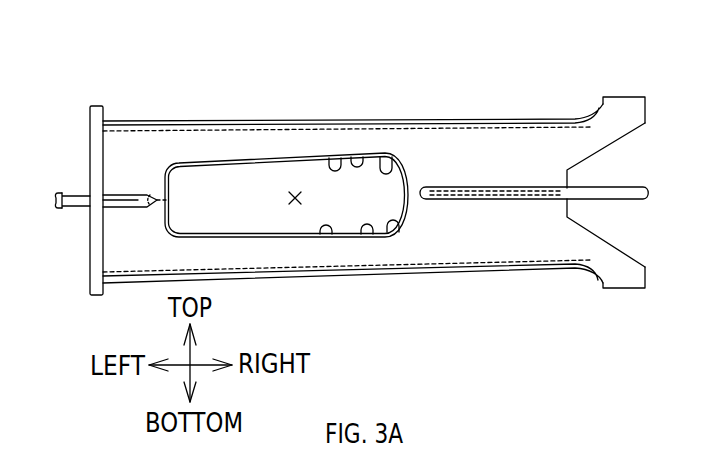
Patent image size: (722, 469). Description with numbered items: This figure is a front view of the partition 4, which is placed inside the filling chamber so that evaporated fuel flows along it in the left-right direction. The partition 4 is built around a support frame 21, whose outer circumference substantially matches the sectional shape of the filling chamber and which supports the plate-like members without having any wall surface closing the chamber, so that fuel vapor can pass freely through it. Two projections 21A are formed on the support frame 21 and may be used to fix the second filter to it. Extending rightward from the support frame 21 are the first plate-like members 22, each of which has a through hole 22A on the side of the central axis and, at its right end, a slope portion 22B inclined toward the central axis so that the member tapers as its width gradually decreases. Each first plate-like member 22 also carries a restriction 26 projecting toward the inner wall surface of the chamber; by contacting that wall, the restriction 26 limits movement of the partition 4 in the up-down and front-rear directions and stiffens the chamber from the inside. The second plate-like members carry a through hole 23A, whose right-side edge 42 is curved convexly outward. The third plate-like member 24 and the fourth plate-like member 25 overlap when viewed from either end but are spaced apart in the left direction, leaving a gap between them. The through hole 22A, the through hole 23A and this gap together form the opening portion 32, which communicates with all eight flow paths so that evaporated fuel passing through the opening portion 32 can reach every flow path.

The partition 4 is at (666, 100).
The support frame 21 is at (95, 148).
The projections 21A is at (57, 209).
The first plate-like members 22 is at (455, 143).
The through hole 22A is at (356, 164).
The slope portion 22B is at (610, 140).
The through hole 23A is at (334, 168).
The third plate-like members 24 is at (610, 192).
The fourth plate-like members 25 is at (126, 199).
The restriction 26 is at (623, 107).
The opening portion 32 is at (295, 190).
The edge 42 is at (388, 170).